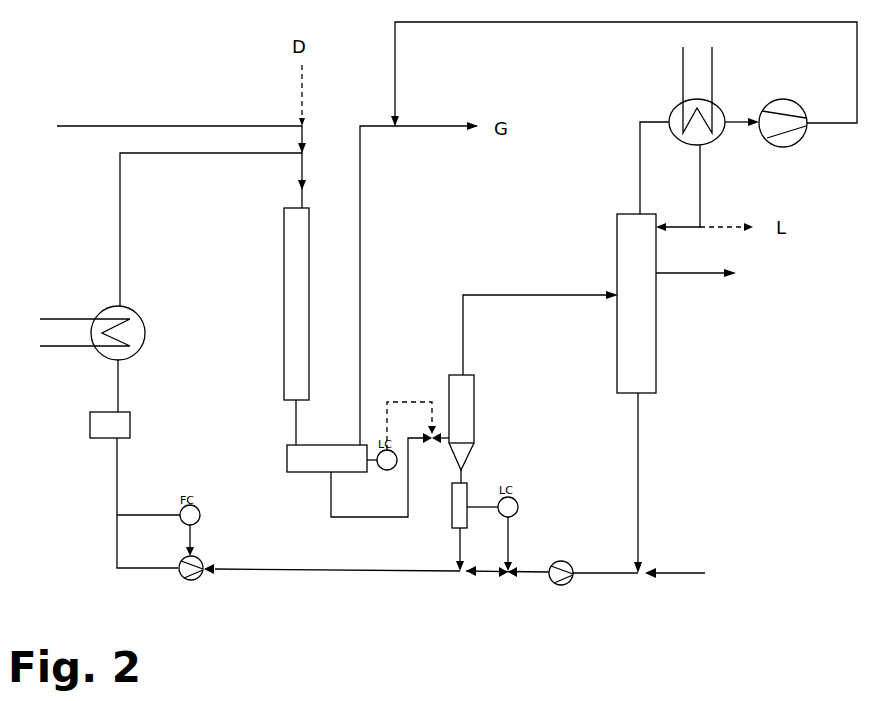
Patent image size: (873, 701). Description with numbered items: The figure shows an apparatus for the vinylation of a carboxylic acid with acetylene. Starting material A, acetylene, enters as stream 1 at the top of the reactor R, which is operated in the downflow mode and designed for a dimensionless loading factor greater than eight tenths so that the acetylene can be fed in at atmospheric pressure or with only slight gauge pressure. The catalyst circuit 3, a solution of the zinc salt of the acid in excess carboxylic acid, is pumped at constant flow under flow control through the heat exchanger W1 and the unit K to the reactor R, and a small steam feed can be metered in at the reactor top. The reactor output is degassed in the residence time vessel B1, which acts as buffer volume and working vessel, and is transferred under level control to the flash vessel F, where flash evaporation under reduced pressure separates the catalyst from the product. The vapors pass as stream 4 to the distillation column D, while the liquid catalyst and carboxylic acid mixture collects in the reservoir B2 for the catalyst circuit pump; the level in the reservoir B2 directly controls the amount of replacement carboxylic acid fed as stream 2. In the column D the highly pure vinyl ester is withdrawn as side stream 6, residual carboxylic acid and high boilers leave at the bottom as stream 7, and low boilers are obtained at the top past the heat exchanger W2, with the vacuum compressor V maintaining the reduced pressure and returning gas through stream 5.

The stream 1 (starting material A) 1 is at (168, 156).
The stream 2 (starting material B) 2 is at (648, 563).
The catalyst circuit 3 is at (147, 503).
The stream 4 is at (540, 324).
The stream 5 is at (624, 74).
The side stream 6 (vinyl ester VE) 6 is at (715, 286).
The stream 7 (residual carboxylic acid) 7 is at (645, 483).
The reactor R is at (275, 304).
The residence time vessel B1 is at (297, 464).
The reservoir B2 is at (441, 505).
The flash vessel F is at (475, 422).
The distillation column D is at (636, 303).
The heat exchanger W1 is at (122, 322).
The heat exchanger W2 is at (670, 96).
The vacuum compressor V is at (783, 100).
The unit K is at (110, 425).